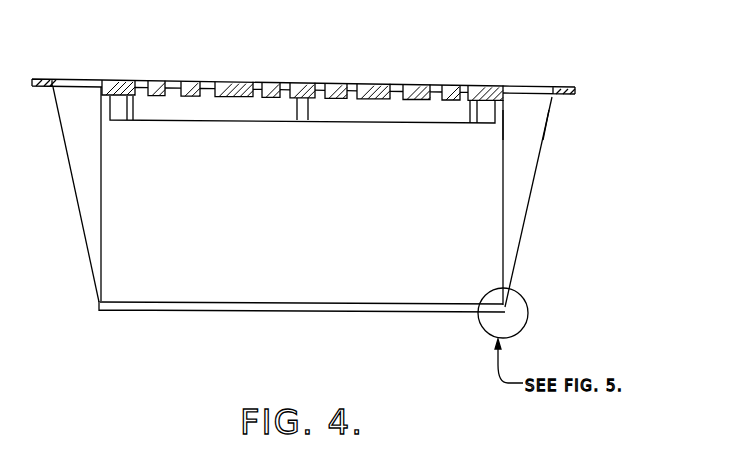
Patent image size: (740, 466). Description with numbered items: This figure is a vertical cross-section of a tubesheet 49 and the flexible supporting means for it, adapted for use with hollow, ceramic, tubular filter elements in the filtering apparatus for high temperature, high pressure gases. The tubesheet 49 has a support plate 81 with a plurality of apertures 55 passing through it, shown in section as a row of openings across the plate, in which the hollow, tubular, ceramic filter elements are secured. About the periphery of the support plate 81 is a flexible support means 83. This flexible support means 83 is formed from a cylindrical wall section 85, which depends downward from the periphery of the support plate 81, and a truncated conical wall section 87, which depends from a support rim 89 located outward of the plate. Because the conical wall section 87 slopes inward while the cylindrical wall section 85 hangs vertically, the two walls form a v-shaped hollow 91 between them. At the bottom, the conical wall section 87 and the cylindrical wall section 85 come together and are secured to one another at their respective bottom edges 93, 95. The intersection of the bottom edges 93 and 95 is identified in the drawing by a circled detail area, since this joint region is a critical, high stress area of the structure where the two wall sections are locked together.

The tubesheet 49 is at (478, 80).
The apertures 55 is at (432, 82).
The support plate 81 is at (337, 79).
The flexible support means 83 is at (74, 78).
The cylindrical wall section 85 is at (503, 192).
The truncated conical wall section 87 is at (540, 162).
The support rim 89 is at (563, 87).
The v-shaped hollow 91 is at (537, 138).
The bottom edge of conical wall section 93 is at (508, 310).
The bottom edge of cylindrical wall section 95 is at (499, 304).